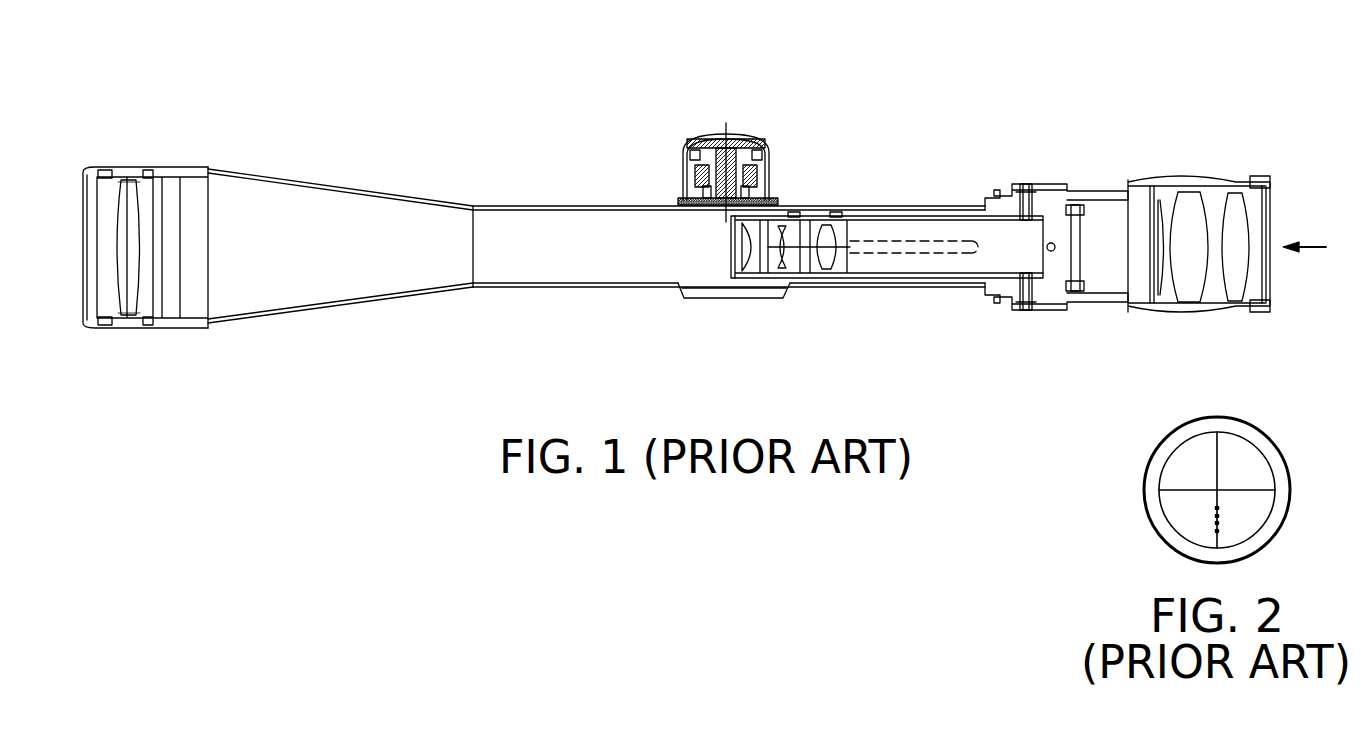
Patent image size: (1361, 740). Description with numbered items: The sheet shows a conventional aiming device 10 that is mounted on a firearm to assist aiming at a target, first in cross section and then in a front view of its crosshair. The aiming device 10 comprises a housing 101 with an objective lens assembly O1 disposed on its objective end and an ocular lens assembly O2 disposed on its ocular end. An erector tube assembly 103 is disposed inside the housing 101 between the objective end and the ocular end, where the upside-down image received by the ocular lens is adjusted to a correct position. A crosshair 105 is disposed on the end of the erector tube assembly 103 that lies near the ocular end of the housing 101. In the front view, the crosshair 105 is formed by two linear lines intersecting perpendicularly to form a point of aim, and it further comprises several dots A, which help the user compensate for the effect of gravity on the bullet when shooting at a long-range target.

In FIG. 1, the conventional aiming device 10 is at (538, 60).
In FIG. 1, the housing 101 is at (634, 205).
In FIG. 1, the erector tube assembly 103 is at (918, 216).
In FIG. 1, the crosshair 105 is at (1077, 233).
In FIG. 2, the crosshair 105 is at (1084, 265).
In FIG. 1, the objective lens assembly O1 is at (80, 163).
In FIG. 1, the ocular lens assembly O2 is at (1152, 163).
In FIG. 2, the dots A is at (1217, 518).